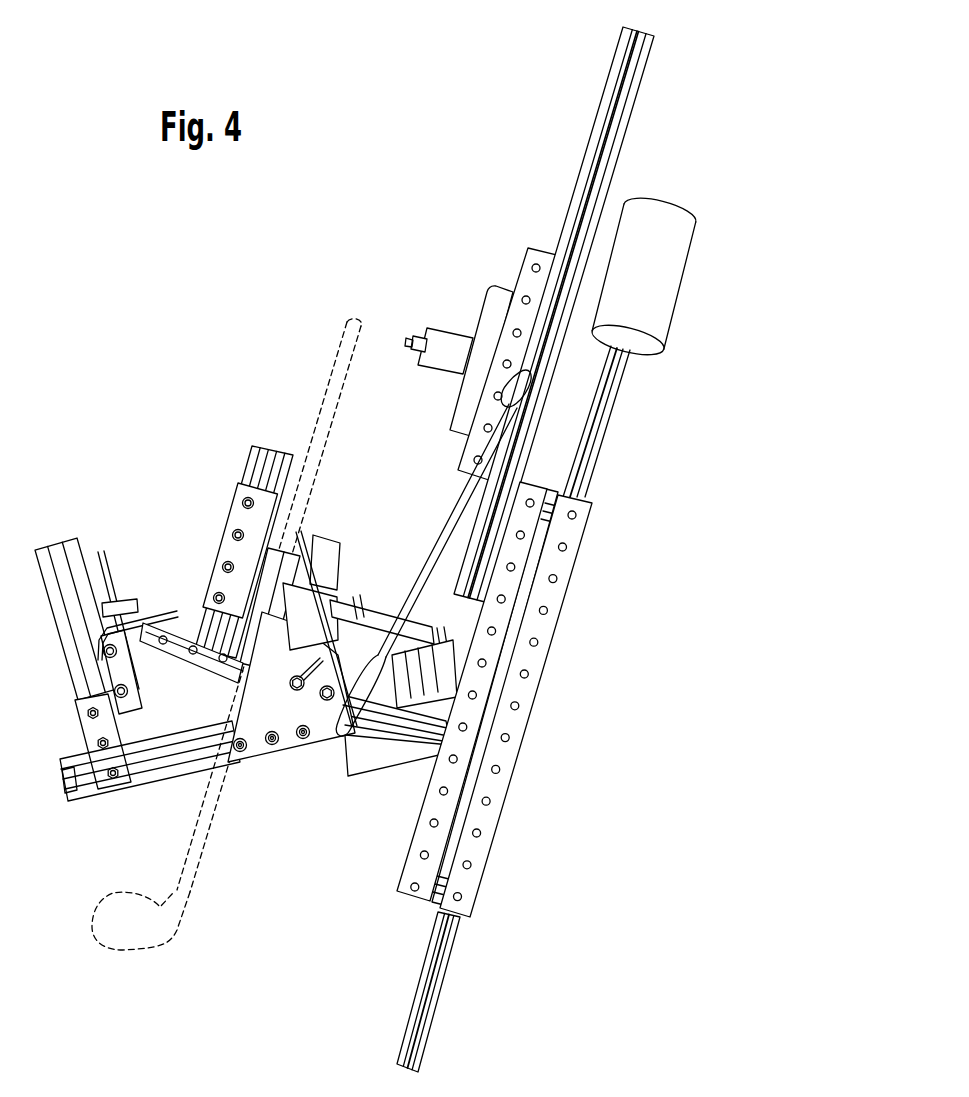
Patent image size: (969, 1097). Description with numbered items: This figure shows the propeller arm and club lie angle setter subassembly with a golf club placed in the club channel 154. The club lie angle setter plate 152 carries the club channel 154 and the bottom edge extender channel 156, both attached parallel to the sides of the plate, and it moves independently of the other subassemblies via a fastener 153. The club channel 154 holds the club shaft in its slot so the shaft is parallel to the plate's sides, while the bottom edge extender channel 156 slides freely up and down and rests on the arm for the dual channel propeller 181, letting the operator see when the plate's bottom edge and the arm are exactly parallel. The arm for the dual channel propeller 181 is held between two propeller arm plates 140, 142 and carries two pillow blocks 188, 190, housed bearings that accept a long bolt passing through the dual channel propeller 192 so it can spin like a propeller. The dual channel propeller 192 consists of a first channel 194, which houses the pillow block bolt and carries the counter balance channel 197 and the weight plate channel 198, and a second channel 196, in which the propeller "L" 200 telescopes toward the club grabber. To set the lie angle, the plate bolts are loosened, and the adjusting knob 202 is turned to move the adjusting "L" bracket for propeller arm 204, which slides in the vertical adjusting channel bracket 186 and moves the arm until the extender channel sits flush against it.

The propeller arm plate 140 is at (263, 720).
The propeller arm plate 142 is at (340, 640).
The club lie angle setter plate 152 is at (257, 527).
The fastener 153 is at (310, 620).
The club channel 154 is at (263, 577).
The bottom edge extender channel 156 is at (257, 448).
The arm for the dual channel propeller 181 is at (210, 663).
The vertical adjusting channel bracket 186 is at (60, 553).
The pillow block 188 is at (393, 720).
The pillow block 190 is at (438, 690).
The dual channel propeller 192 is at (477, 780).
The first channel 194 is at (490, 651).
The second channel 196 is at (502, 752).
The counter balance channel 197 is at (587, 167).
The weight plate channel 198 is at (530, 247).
The propeller "L" 200 is at (617, 407).
The adjusting knob 202 is at (120, 603).
The adjusting "L" bracket for propeller arm 204 is at (140, 620).